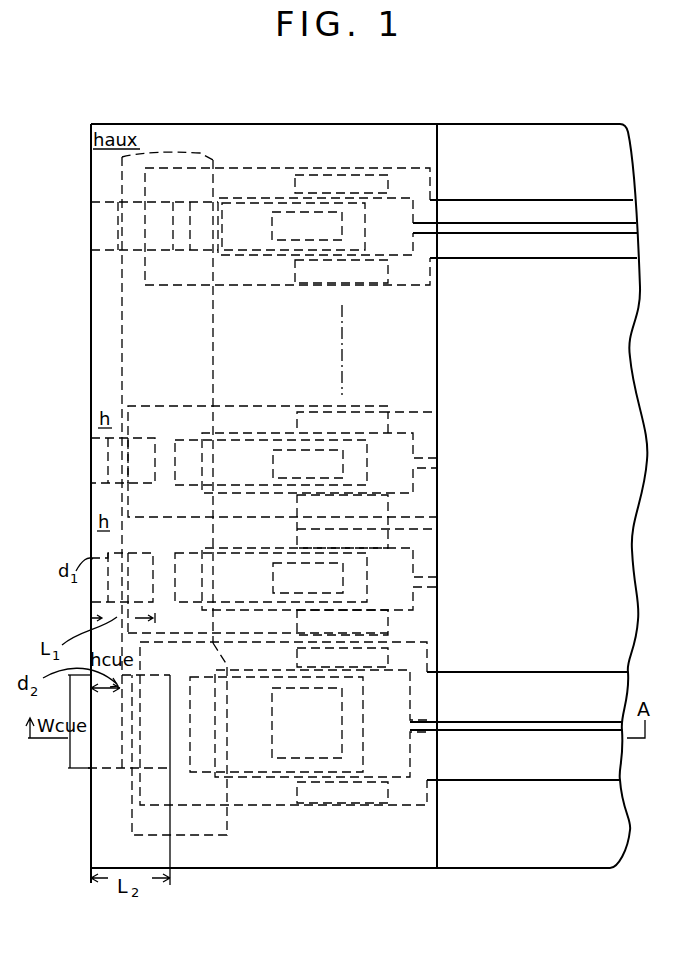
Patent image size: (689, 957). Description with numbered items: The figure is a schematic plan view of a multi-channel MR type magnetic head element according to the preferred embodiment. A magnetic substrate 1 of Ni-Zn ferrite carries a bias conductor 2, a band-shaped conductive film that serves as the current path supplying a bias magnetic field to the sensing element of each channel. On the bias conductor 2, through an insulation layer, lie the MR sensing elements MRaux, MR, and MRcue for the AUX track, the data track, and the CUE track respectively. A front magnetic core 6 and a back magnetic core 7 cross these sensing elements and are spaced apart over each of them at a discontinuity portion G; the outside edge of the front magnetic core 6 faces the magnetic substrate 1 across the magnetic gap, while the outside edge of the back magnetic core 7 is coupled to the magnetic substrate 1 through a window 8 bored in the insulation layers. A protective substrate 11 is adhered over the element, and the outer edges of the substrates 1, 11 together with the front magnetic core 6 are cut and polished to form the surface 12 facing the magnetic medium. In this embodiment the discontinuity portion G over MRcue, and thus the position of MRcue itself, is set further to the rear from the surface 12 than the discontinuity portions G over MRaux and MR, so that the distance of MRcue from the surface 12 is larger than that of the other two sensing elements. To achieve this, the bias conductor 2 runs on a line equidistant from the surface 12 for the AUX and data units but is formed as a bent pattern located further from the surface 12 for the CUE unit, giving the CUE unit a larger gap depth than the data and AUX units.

The magnetic substrate 1 is at (597, 855).
The bias conductor 2 is at (225, 837).
The front magnetic core 6 is at (115, 768).
The back magnetic core 7 is at (270, 775).
The window 8 is at (340, 460).
The protective substrate 11 is at (435, 827).
The surface opposite to the magnetic medium 12 is at (90, 438).
The MR sensing element for the AUX track MRaux is at (150, 152).
The discontinuity portion G is at (182, 203).
The MR sensing element for the data track MR is at (122, 410).
The MR sensing element for the CUE track MRcue is at (140, 797).